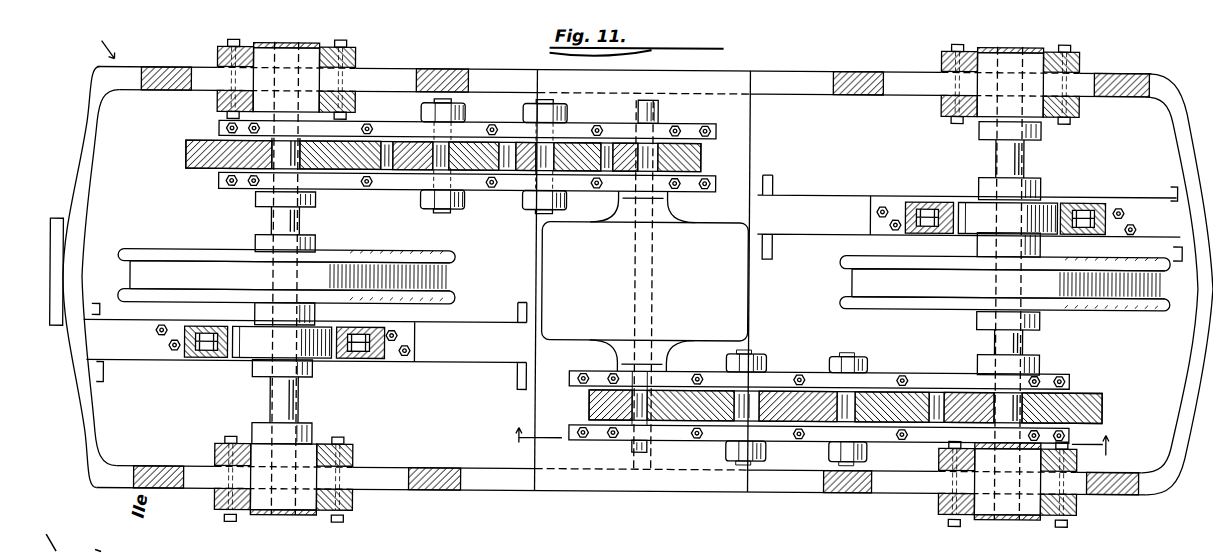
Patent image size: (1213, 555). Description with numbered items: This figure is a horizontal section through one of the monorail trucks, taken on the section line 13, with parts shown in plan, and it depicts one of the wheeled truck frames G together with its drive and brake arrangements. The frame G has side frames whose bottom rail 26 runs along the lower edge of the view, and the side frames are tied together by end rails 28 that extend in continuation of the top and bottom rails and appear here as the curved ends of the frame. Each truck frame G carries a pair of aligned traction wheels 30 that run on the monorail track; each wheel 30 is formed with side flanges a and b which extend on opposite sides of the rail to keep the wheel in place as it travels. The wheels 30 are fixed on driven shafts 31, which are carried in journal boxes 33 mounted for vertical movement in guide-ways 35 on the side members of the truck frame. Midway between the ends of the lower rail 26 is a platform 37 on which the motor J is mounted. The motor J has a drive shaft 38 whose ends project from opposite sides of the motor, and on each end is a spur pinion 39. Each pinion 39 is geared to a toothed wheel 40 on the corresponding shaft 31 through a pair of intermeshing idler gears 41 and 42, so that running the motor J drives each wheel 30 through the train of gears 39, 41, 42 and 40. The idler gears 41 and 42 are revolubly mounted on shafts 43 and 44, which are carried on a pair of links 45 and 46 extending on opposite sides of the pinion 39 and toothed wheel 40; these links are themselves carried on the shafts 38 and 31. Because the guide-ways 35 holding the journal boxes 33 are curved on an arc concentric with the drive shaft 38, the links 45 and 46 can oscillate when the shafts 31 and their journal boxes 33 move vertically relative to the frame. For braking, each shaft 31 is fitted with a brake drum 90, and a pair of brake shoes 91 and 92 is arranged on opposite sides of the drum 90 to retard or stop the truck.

The section line 13 is at (806, 442).
The bottom rail 26 is at (500, 483).
The end rail 28 is at (97, 88).
The traction wheel 30 is at (644, 278).
The driven shaft 31 is at (282, 221).
The journal box 33 is at (305, 52).
The guide-way 35 is at (353, 55).
The platform 37 is at (534, 410).
The drive shaft 38 is at (634, 447).
The spur pinion 39 is at (699, 156).
The toothed wheel 40 is at (639, 282).
The idler gear 41 is at (512, 163).
The idler gear 42 is at (400, 168).
The idler shaft 43 is at (755, 349).
The idler shaft 44 is at (850, 356).
The link 45 is at (217, 129).
The link 46 is at (217, 184).
The brake drum 90 is at (257, 346).
The brake shoe 91 is at (218, 356).
The brake shoe 92 is at (348, 360).
The wheeled truck frame G is at (99, 40).
The motor J is at (548, 276).
The side flange a is at (443, 254).
The side flange b is at (443, 298).